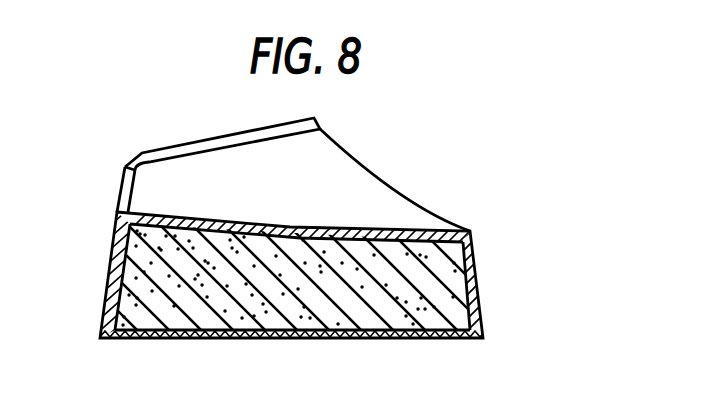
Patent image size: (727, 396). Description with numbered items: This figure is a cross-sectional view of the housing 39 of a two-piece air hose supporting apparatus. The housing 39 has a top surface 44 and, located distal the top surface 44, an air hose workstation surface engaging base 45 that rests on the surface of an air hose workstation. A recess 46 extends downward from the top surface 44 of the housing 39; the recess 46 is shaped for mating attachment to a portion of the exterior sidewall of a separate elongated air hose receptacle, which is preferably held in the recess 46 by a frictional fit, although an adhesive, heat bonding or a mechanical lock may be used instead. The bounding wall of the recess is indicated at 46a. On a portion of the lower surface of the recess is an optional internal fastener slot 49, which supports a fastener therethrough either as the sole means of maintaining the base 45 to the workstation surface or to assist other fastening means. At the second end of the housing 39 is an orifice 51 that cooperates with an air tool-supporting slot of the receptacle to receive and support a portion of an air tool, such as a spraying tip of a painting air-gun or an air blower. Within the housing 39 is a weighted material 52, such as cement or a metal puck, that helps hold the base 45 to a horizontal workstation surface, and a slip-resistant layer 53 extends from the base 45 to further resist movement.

The housing 39 is at (465, 145).
The top surface 44 is at (194, 140).
The air hose workstation surface engaging base 45 is at (480, 337).
The recess 46 is at (285, 190).
The curved edge of upper wall 46a is at (395, 232).
The internal fastener slot 49 is at (300, 226).
The orifice 51 is at (120, 192).
The filler material 52 is at (350, 318).
The bottom layer 53 is at (208, 333).